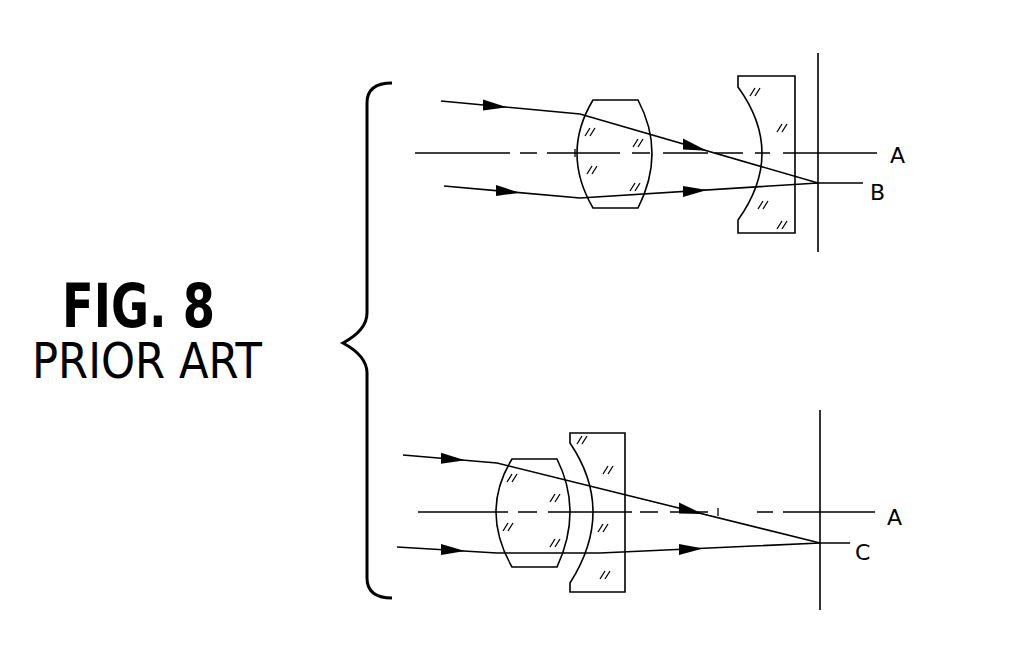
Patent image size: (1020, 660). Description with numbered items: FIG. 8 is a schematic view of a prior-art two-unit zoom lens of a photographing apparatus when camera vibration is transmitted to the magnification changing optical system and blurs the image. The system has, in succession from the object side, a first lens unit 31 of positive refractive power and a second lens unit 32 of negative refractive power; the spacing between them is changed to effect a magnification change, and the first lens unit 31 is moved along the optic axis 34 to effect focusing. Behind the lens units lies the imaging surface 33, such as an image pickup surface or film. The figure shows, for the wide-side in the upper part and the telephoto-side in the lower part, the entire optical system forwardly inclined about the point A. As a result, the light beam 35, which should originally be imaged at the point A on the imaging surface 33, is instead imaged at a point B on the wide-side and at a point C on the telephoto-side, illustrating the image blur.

The first lens unit 31 is at (632, 210).
The second lens unit 32 is at (757, 233).
The imaging surface 33 is at (820, 220).
The optic axis 34 is at (574, 160).
The light beam 35 is at (470, 190).